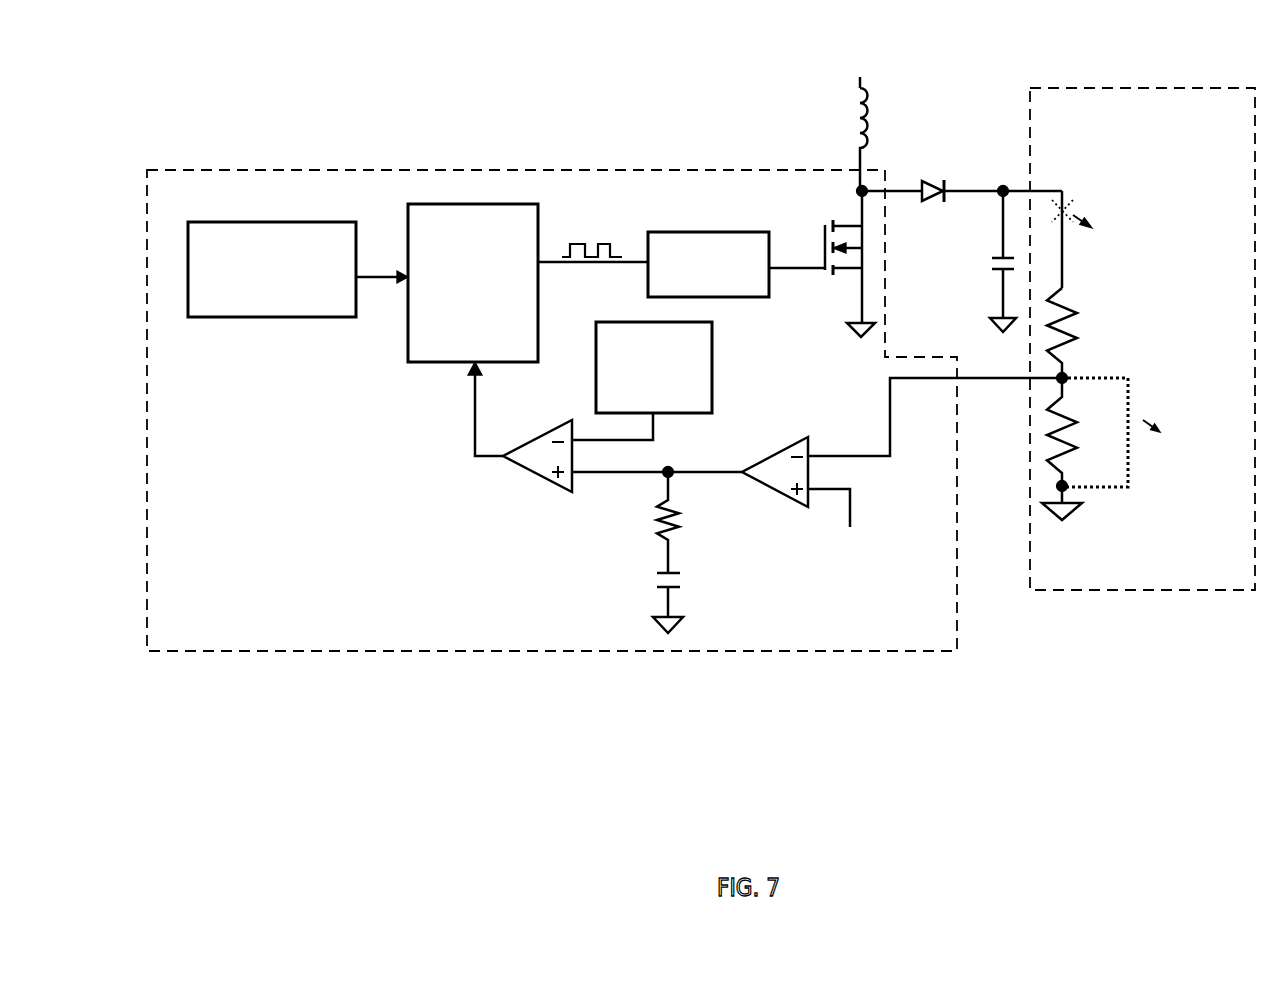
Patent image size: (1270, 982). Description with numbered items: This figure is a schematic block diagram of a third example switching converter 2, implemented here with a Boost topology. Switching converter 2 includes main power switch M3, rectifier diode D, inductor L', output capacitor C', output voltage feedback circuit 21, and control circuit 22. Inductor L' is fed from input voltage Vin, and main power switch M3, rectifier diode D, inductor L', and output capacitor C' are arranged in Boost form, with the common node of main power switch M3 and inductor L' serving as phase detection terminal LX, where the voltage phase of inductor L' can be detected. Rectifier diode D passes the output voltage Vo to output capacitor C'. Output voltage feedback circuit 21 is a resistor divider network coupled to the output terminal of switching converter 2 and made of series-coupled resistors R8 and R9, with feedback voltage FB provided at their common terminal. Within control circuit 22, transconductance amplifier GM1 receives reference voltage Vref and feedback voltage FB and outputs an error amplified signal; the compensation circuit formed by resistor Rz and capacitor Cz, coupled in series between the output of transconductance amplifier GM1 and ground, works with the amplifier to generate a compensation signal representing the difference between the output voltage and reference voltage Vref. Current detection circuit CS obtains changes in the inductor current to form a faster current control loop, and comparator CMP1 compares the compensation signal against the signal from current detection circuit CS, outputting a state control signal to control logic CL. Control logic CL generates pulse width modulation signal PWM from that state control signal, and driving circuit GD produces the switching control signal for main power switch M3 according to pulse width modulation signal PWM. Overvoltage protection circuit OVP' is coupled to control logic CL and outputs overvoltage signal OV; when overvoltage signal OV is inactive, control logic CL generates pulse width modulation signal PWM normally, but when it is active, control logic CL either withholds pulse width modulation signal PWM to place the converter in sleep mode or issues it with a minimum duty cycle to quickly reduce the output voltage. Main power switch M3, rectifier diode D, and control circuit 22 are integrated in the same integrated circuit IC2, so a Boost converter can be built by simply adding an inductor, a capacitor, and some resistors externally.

The switching converter 2 is at (701, 337).
The output voltage feedback circuit 21 is at (1076, 76).
The control circuit 22 is at (392, 540).
The integrated circuit IC2 is at (292, 204).
The overvoltage protection circuit OVP' is at (272, 302).
The overvoltage signal OV is at (382, 266).
The control logic CL is at (427, 362).
The pulse width modulation signal PWM is at (593, 240).
The driving circuit GD is at (745, 297).
The current detection circuit CS is at (712, 397).
The main power switch M3 is at (835, 264).
The phase detection terminal LX is at (841, 191).
The input voltage Vin is at (860, 66).
The inductor L' is at (880, 139).
The rectifier diode D is at (962, 207).
The output voltage node Vo is at (995, 176).
The output capacitor C' is at (985, 261).
The resistor R8 is at (1079, 333).
The feedback voltage FB is at (938, 415).
The resistor R9 is at (1077, 440).
The comparator CMP1 is at (605, 439).
The transconductance amplifier GM1 is at (775, 484).
The reference voltage Vref is at (842, 526).
The resistor Rz is at (684, 522).
The capacitor Cz is at (681, 601).